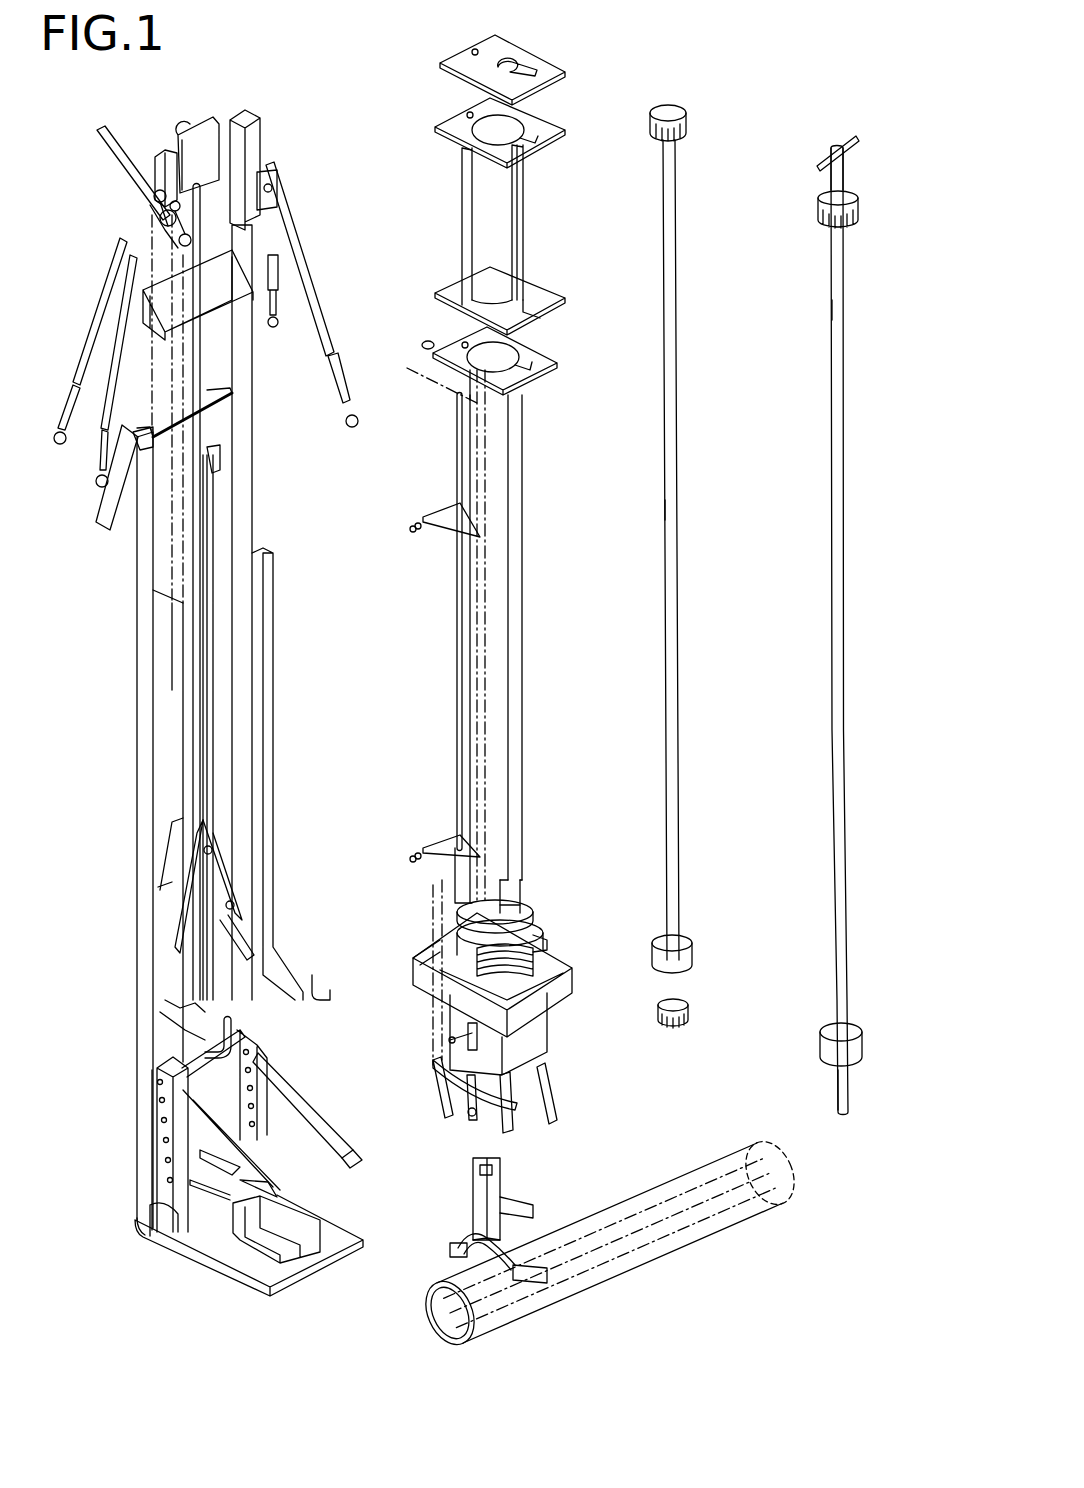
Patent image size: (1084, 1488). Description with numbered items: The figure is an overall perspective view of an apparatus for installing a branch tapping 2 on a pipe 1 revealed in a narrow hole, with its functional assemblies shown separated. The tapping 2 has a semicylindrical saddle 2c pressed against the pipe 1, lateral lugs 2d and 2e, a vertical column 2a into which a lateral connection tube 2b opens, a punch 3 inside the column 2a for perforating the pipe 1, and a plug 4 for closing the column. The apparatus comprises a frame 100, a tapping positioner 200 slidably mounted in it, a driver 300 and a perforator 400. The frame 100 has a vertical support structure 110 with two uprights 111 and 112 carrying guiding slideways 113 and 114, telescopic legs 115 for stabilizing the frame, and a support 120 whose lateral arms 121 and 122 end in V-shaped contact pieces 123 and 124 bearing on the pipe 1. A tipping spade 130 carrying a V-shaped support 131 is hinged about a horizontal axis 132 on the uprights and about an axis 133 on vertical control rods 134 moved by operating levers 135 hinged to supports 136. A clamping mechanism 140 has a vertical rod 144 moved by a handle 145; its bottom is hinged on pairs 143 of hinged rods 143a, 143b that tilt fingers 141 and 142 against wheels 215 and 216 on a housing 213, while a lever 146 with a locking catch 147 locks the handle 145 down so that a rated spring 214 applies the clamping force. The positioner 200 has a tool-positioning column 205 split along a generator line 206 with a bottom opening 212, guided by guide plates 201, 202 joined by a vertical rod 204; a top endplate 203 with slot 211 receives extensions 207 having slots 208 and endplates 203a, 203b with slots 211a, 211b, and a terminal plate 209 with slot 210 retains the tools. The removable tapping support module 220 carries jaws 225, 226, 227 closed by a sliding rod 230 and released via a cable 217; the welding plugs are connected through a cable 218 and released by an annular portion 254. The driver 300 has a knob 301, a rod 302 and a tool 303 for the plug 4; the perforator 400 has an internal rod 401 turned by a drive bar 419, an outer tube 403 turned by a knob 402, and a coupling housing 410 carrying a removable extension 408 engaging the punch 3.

The pipe 1 is at (428, 1318).
The branch tapping 2 is at (543, 1193).
The vertical column 2a is at (473, 1203).
The lateral parallel connection tube 2b is at (533, 1211).
The saddle 2c is at (468, 1236).
The lateral lug 2d is at (450, 1252).
The lateral lug 2e is at (535, 1278).
The punch 3 is at (492, 1170).
The plug 4 is at (662, 1028).
The frame 100 is at (128, 708).
The vertical support structure 110 is at (170, 1157).
The vertical upright 111 is at (165, 571).
The vertical upright 112 is at (243, 516).
The guiding slideway 113 is at (165, 807).
The guiding slideway 114 is at (268, 740).
The telescopic legs 115 is at (280, 262).
The support 120 is at (268, 1061).
The lateral arm 121 is at (225, 1146).
The lateral arm 122 is at (280, 1106).
The contact piece 123 is at (278, 1187).
The contact piece 124 is at (352, 1150).
The tipping spade 130 is at (200, 1258).
The V-shaped support 131 is at (262, 1232).
The horizontal axis 132 is at (162, 1222).
The horizontal axis 133 is at (152, 1222).
The vertical control rod 134 is at (143, 1184).
The operating lever 135 is at (215, 456).
The support 136 is at (95, 450).
The clamping mechanism 140 is at (176, 921).
The finger 141 is at (233, 1032).
The finger 142 is at (328, 986).
The pair of hinged rods 143 is at (182, 936).
The hinged rod 143a is at (218, 875).
The hinged rod 143b is at (232, 936).
The vertical rod 144 is at (200, 362).
The handle 145 is at (182, 128).
The lever 146 is at (110, 138).
The locking catch 147 is at (280, 188).
The tapping positioner 200 is at (458, 668).
The guide plate 201 is at (450, 838).
The guide plate 202 is at (448, 500).
The top endplate 203 is at (530, 361).
The endplate 203a is at (537, 292).
The endplate 203b is at (545, 130).
The vertical rod 204 is at (457, 600).
The tool-positioning column 205 is at (500, 470).
The generator line 206 is at (515, 836).
The extension 207 is at (480, 228).
The slot 208 is at (518, 221).
The terminal plate 209 is at (540, 68).
The slot 210 is at (532, 80).
The slot 211 is at (525, 388).
The slot 211a is at (542, 318).
The slot 211b is at (530, 144).
The bottom opening 212 is at (509, 882).
The housing 213 is at (530, 953).
The rated spring 214 is at (566, 967).
The wheel 215 is at (415, 968).
The wheel 216 is at (535, 909).
The cable 217 is at (433, 341).
The cable 218 is at (408, 369).
The tapping support module 220 is at (562, 1022).
The jaw 225 is at (511, 1133).
The jaw 226 is at (556, 1115).
The jaw 227 is at (445, 1105).
The sliding rod 230 is at (480, 1062).
The annular portion 254 is at (472, 1120).
The driver 300 is at (677, 338).
The knob 301 is at (688, 134).
The rod 302 is at (672, 553).
The tool 303 is at (690, 965).
The perforator 400 is at (835, 484).
The internal rod 401 is at (830, 176).
The knob 402 is at (818, 218).
The outer tube 403 is at (831, 310).
The removable extension 408 is at (843, 1088).
The coupling housing 410 is at (822, 1049).
The drive bar 419 is at (818, 166).